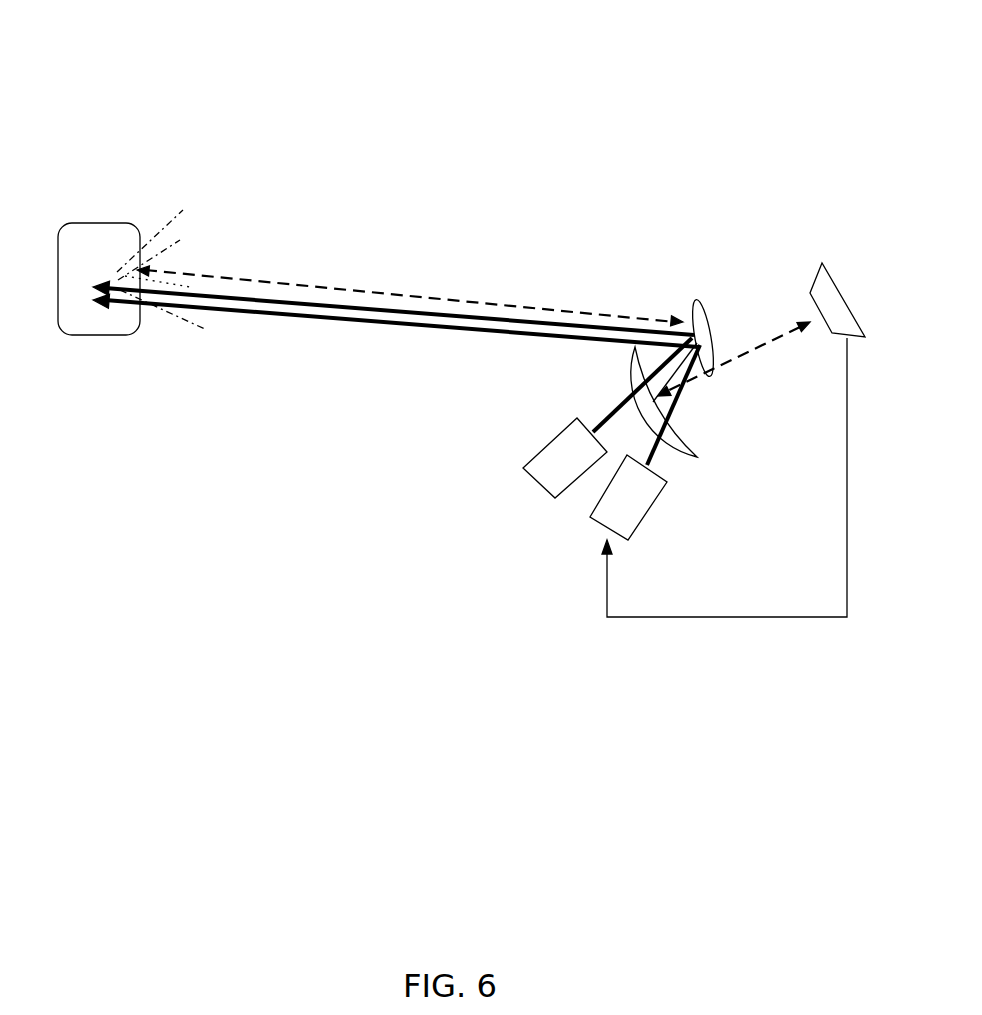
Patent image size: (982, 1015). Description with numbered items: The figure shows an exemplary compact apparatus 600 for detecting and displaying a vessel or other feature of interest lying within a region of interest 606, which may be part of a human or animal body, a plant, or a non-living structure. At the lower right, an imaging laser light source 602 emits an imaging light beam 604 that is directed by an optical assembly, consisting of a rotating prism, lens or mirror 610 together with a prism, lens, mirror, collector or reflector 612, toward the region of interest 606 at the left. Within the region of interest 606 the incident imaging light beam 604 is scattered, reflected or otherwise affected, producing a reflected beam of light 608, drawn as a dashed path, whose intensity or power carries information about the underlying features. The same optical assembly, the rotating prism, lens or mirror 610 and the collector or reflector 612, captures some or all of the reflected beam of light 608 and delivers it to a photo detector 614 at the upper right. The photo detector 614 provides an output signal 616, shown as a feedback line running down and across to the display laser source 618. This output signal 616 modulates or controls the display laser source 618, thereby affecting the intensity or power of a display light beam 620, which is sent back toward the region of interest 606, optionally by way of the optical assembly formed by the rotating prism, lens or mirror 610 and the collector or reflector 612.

The compact apparatus 600 is at (565, 118).
The imaging laser light source 602 is at (540, 445).
The imaging light beam 604 is at (257, 290).
The region of interest 606 is at (102, 327).
The reflected beam of light 608 is at (338, 287).
The rotating prism, lens or mirror 610 is at (694, 300).
The prism, lens, mirror, collector or reflector 612 is at (623, 358).
The photo detector 614 is at (815, 277).
The output signal 616 is at (732, 617).
The display laser source 618 is at (588, 507).
The display light beam 620 is at (428, 328).